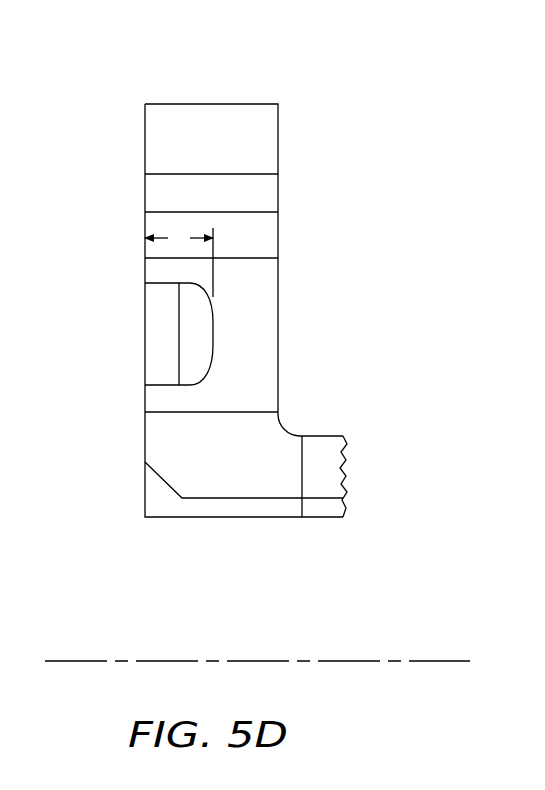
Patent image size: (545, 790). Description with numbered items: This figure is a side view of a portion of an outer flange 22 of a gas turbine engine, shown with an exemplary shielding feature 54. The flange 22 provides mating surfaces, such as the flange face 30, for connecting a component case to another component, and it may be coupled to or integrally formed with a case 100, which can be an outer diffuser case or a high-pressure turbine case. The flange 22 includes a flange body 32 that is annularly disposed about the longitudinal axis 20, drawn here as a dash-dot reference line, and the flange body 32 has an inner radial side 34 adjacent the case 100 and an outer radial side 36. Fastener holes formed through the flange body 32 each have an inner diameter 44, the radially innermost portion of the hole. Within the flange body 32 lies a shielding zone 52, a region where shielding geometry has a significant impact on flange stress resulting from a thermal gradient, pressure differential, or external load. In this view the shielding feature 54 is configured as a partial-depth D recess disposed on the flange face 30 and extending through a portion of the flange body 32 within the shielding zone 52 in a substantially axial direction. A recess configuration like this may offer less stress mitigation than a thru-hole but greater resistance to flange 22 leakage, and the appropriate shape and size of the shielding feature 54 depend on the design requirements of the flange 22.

The longitudinal axis 20 is at (458, 660).
The flange 22 is at (315, 97).
The flange face 30 is at (145, 232).
The flange body 32 is at (262, 293).
The inner radial side 34 is at (275, 498).
The outer radial side 36 is at (210, 104).
The inner diameter 44 is at (145, 385).
The shielding zone 52 is at (248, 357).
The shielding feature 54 is at (145, 355).
The case 100 is at (157, 490).